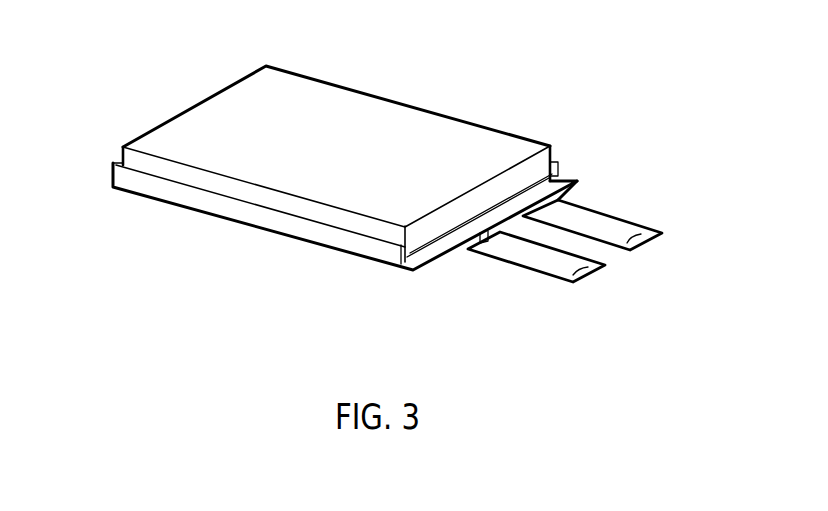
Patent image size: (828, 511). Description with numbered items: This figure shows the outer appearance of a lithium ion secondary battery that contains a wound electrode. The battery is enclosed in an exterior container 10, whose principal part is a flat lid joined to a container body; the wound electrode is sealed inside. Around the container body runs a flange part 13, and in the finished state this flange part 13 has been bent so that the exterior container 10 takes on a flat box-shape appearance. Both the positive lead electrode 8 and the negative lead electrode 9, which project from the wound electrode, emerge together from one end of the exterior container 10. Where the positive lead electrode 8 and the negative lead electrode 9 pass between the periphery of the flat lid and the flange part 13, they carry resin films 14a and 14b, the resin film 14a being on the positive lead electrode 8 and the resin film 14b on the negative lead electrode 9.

The positive lead electrode 8 is at (594, 272).
The negative lead electrode 9 is at (652, 242).
The exterior container 10 is at (390, 120).
The flange part 13 is at (297, 222).
The resin film 14a is at (483, 245).
The resin film 14b is at (556, 163).